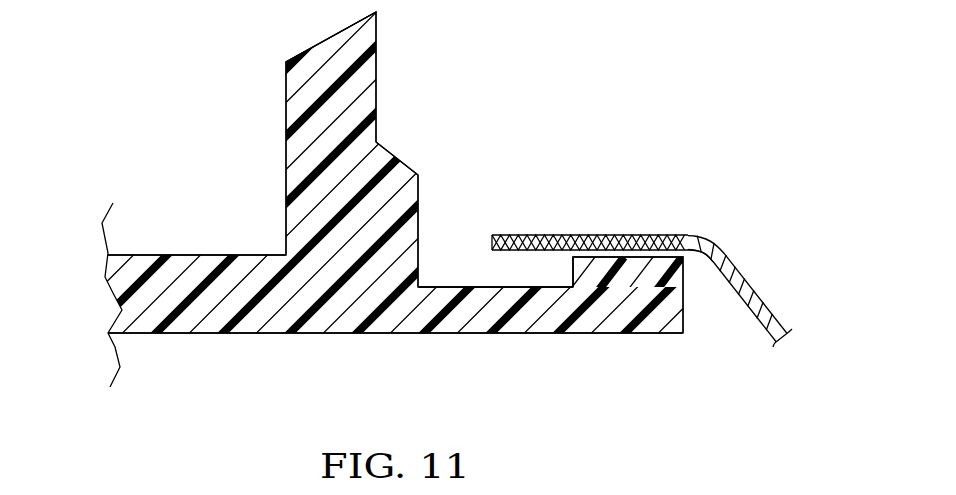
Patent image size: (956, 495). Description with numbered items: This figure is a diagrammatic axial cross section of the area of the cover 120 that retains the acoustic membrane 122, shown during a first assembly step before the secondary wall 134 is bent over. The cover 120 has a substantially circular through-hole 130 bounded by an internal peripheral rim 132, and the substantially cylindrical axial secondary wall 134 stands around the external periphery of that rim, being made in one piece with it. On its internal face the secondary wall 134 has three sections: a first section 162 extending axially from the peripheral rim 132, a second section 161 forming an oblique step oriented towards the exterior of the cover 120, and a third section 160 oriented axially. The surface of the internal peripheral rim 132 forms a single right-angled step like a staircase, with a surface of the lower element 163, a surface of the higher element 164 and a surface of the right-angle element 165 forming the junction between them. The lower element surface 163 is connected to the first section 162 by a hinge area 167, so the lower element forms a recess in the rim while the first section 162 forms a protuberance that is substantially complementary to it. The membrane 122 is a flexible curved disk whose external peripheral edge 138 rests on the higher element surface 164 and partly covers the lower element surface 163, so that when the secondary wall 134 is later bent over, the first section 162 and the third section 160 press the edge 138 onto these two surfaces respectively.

The cover 120 is at (148, 53).
The secondary wall 134 is at (325, 73).
The internal peripheral rim 132 is at (423, 312).
The third section 160 is at (378, 57).
The second section 161 is at (380, 143).
The first section 162 is at (419, 208).
The surface of the lower element of the step 163 is at (445, 287).
The hinge area 167 is at (420, 288).
The through-hole 130 is at (703, 318).
The surface of the right-angle element 165 is at (576, 268).
The external peripheral edge 138 is at (585, 235).
The surface of the higher element of the step 164 is at (652, 251).
The membrane 122 is at (724, 243).